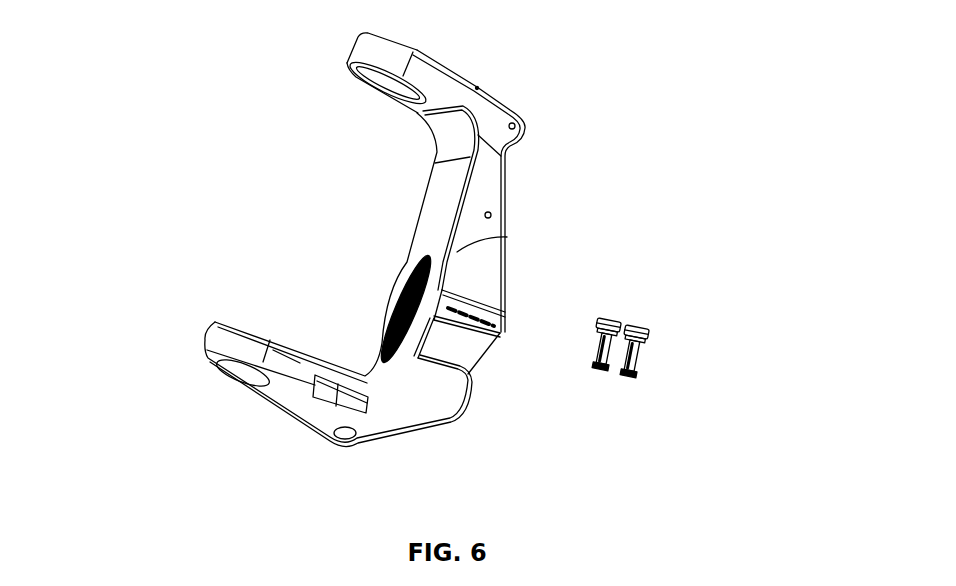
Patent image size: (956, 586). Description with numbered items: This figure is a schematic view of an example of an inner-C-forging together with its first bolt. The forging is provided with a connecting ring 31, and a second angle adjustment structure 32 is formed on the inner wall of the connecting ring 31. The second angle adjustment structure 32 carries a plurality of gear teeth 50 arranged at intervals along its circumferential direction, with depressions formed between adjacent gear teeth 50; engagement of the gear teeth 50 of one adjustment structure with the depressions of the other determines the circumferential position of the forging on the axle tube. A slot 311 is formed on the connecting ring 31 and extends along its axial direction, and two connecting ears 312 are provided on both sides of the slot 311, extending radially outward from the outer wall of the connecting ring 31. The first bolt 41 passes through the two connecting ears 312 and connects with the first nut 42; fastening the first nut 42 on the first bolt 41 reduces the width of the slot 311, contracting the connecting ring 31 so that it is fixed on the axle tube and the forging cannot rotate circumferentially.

The connecting ring 31 is at (480, 265).
The second angle adjustment structure 32 is at (375, 268).
The slot 311 is at (470, 305).
The connecting ears 312 is at (503, 315).
The first bolt 41 is at (650, 344).
The first nut 42 is at (640, 375).
The gear teeth 50 is at (390, 325).